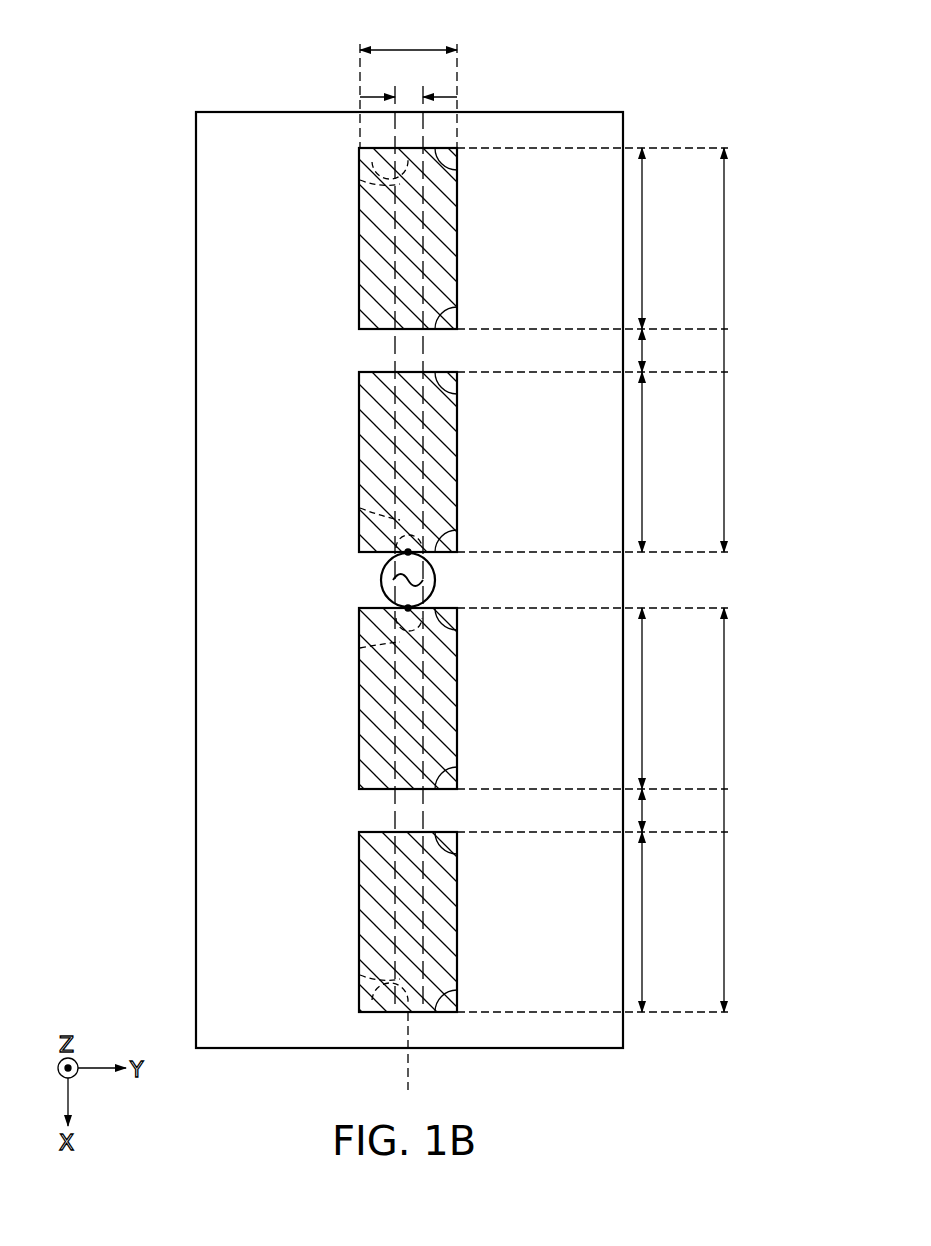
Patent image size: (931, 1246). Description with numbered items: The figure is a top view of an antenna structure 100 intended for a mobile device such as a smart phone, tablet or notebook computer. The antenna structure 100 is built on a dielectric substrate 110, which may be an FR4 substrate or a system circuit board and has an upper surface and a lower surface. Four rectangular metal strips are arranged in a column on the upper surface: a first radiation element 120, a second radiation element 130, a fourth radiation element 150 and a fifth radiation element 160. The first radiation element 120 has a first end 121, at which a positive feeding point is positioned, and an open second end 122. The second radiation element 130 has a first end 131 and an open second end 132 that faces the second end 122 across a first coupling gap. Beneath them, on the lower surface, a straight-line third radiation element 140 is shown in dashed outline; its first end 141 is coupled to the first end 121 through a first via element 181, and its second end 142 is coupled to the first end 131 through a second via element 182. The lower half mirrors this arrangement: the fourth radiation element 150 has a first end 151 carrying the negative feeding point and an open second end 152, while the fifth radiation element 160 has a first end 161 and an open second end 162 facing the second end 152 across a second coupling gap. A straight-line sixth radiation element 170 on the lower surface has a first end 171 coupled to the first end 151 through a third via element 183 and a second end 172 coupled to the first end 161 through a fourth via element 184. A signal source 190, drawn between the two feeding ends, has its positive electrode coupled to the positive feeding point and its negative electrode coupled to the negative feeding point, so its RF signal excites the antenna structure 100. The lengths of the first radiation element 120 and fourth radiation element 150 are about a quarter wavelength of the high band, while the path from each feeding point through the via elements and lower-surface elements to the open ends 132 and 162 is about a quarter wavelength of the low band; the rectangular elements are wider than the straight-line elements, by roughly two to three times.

The antenna structure 100 is at (124, 37).
The dielectric substrate 110 is at (206, 150).
The first radiation element 120 is at (445, 465).
The first end of the first radiation element 121 is at (457, 533).
The second end of the first radiation element 122 is at (457, 394).
The second radiation element 130 is at (445, 230).
The first end of the second radiation element 131 is at (457, 170).
The second end of the second radiation element 132 is at (457, 310).
The third radiation element 140 is at (413, 352).
The first end of the third radiation element 141 is at (360, 508).
The second end of the third radiation element 142 is at (360, 182).
The fourth radiation element 150 is at (445, 705).
The first end of the fourth radiation element 151 is at (457, 630).
The second end of the fourth radiation element 152 is at (457, 770).
The fifth radiation element 160 is at (445, 915).
The first end of the fifth radiation element 161 is at (457, 993).
The second end of the fifth radiation element 162 is at (457, 854).
The sixth radiation element 170 is at (413, 812).
The first end of the sixth radiation element 171 is at (360, 650).
The second end of the sixth radiation element 172 is at (360, 975).
The first via element 181 is at (390, 539).
The second via element 182 is at (373, 162).
The third via element 183 is at (395, 626).
The fourth via element 184 is at (373, 993).
The signal source 190 is at (437, 580).